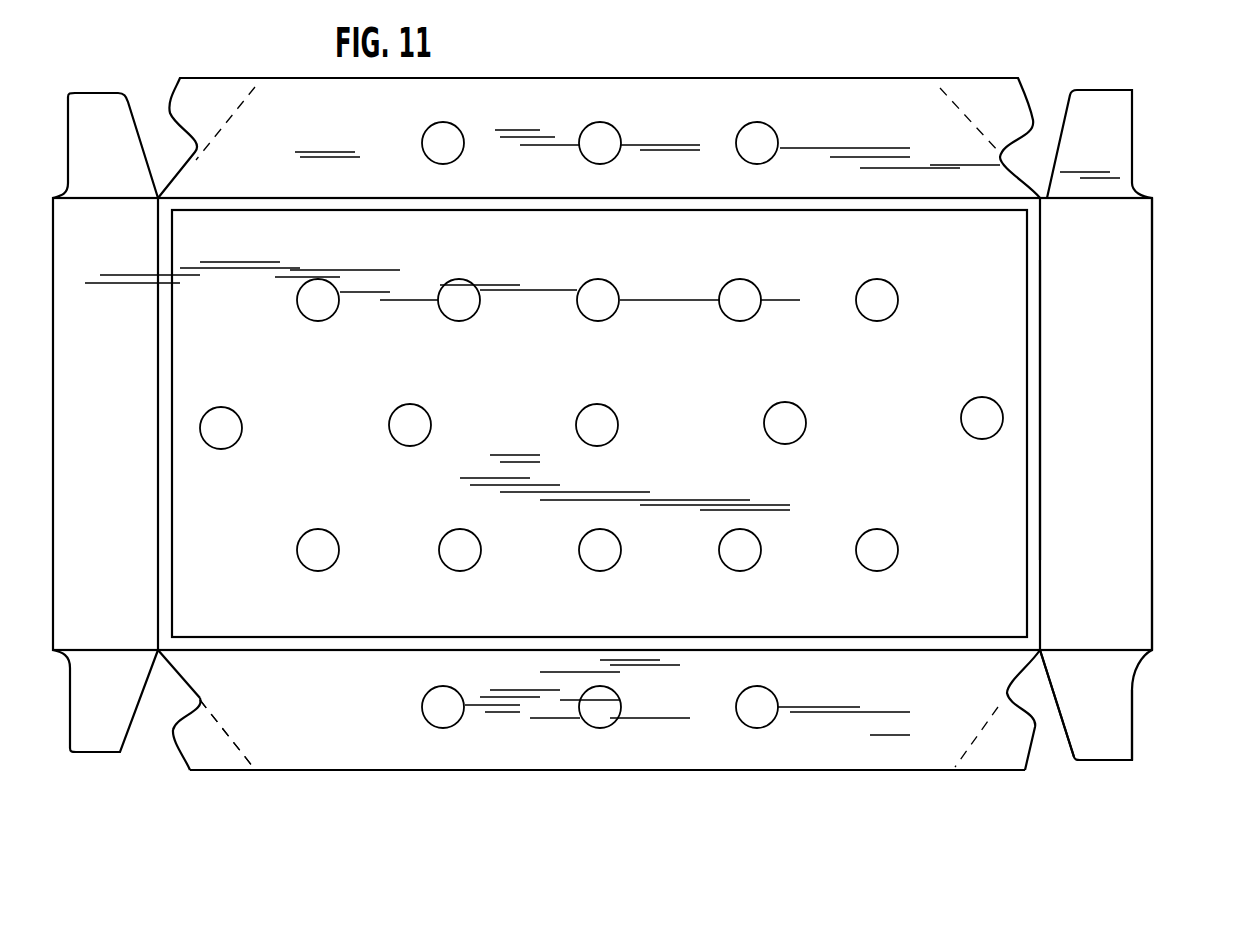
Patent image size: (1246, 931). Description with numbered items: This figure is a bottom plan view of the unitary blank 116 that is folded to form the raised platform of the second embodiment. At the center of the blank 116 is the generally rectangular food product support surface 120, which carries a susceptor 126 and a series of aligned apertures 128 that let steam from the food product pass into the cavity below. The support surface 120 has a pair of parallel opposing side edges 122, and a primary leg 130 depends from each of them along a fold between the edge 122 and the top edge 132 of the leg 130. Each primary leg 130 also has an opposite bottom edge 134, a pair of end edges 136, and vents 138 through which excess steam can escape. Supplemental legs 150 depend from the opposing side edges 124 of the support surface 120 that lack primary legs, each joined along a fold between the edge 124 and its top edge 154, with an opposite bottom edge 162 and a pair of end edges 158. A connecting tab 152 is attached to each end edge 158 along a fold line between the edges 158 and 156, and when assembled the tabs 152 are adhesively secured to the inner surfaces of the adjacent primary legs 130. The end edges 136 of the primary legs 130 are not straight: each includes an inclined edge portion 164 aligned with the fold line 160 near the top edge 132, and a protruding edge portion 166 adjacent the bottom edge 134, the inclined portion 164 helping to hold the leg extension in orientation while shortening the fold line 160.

The unitary blank 116 is at (1146, 85).
The food product support surface 120 is at (853, 640).
The side edge of food product support surface 122 is at (1041, 657).
The side edge of food product support surface 124 is at (1040, 496).
The susceptor 126 is at (920, 617).
The aperture 128 is at (593, 575).
The primary leg 130 is at (710, 773).
The top edge of primary leg 132 is at (963, 652).
The bottom edge of primary leg 134 is at (453, 772).
The end edge of primary leg 136 is at (175, 747).
The vent 138 is at (752, 730).
The supplemental leg 150 is at (1153, 612).
The connecting tab 152 is at (1133, 733).
The top edge of supplemental leg 154 is at (1042, 310).
The edge of connecting tab 156 is at (1104, 652).
The end edge of supplemental leg 158 is at (1080, 643).
The fold line 160 is at (240, 740).
The bottom edge of supplemental leg 162 is at (1153, 230).
The inclined edge portion 164 is at (183, 673).
The protruding edge portion 166 is at (200, 770).